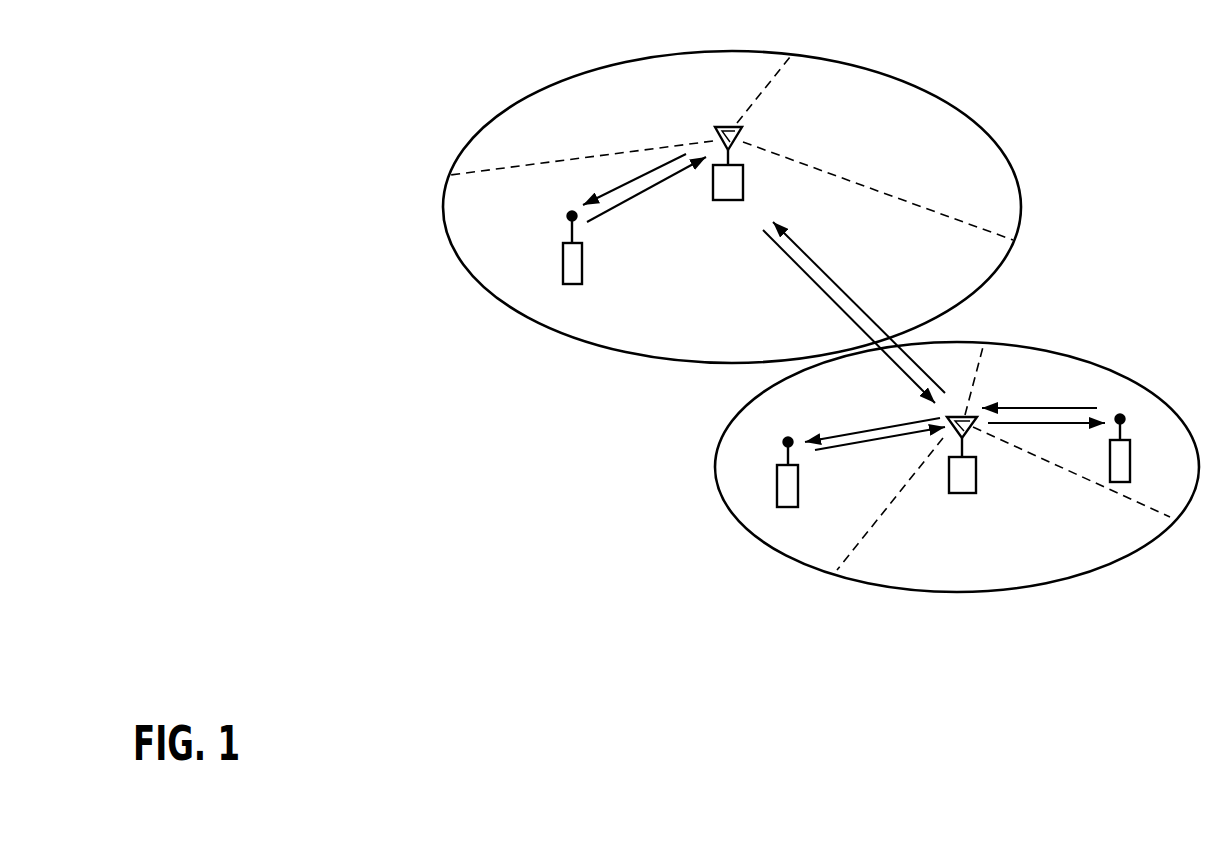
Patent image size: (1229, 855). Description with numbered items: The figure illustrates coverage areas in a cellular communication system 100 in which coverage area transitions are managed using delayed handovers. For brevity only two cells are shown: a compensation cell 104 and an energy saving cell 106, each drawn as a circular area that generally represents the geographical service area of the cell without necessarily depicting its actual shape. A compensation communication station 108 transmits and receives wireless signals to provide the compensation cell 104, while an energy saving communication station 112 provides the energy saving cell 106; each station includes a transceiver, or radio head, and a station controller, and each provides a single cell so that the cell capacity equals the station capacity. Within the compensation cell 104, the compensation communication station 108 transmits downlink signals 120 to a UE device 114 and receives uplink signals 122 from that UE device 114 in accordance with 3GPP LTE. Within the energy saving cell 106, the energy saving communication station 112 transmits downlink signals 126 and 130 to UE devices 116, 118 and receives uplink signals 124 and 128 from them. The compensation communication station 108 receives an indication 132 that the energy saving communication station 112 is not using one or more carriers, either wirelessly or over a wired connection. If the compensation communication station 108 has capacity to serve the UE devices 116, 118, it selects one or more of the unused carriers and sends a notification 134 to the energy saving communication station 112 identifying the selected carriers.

The cellular communication system 100 is at (552, 487).
The compensation cell 104 is at (733, 52).
The energy saving cell 106 is at (1055, 352).
The compensation communication station 108 is at (727, 200).
The energy saving communication station 112 is at (977, 480).
The UE device 114 is at (582, 263).
The UE device 116 is at (1130, 461).
The UE device 118 is at (798, 487).
The downlink signals 120 is at (623, 182).
The uplink signals 122 is at (608, 210).
The uplink signals 124 is at (1047, 408).
The downlink signals 126 is at (1032, 425).
The uplink signals 128 is at (845, 445).
The downlink signals 130 is at (838, 437).
The indication 132 is at (832, 284).
The notification 134 is at (812, 280).